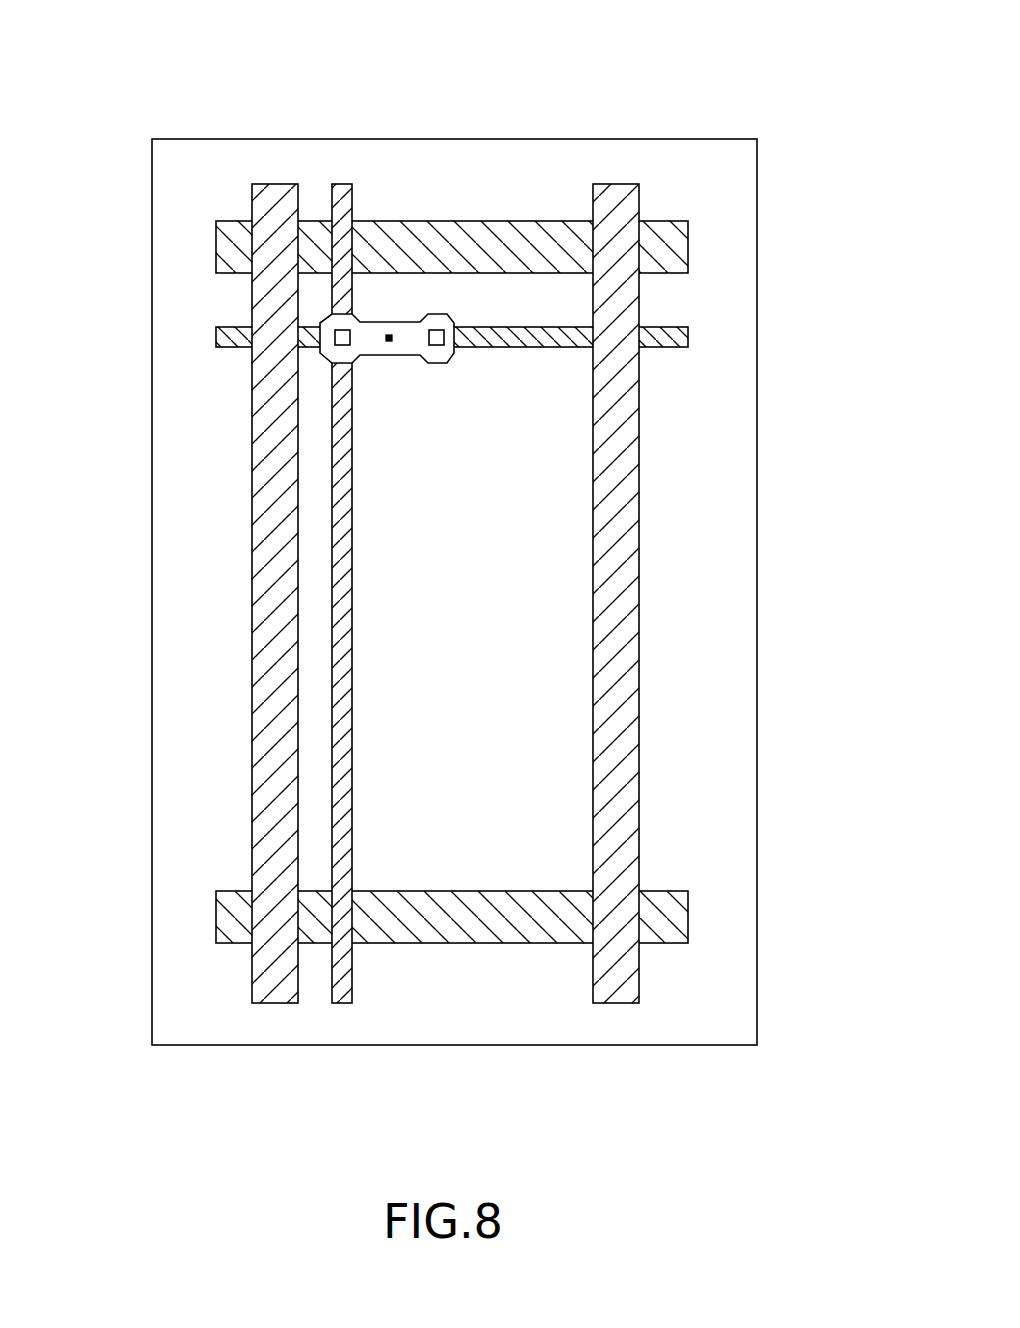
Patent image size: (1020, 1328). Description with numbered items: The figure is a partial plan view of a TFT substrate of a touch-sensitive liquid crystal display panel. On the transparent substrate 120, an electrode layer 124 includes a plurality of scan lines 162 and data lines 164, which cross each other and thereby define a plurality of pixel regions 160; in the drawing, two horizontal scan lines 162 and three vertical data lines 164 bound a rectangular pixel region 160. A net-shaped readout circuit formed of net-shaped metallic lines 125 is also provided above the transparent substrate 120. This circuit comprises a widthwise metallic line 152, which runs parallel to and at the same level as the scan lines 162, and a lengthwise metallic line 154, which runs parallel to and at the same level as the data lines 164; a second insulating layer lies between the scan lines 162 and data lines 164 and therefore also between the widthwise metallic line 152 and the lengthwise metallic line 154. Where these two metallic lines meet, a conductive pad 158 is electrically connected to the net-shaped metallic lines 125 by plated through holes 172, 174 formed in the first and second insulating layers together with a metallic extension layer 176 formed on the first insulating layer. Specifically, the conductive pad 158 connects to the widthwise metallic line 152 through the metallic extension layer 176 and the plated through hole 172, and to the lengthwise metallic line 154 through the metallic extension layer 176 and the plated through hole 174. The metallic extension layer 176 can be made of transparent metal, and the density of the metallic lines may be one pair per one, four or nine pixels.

The transparent substrate 120 is at (733, 868).
The electrode layer 124 is at (646, 446).
The net-shaped metallic lines 125 is at (552, 308).
The widthwise metallic line 152 is at (509, 328).
The lengthwise metallic line 154 is at (343, 760).
The conductive pad 158 is at (389, 335).
The pixel region 160 is at (510, 722).
The scan line 162 is at (369, 257).
The data line 164 is at (275, 647).
The plated through hole 172 is at (451, 333).
The plated through hole 174 is at (341, 337).
The metallic extension layer 176 is at (373, 355).